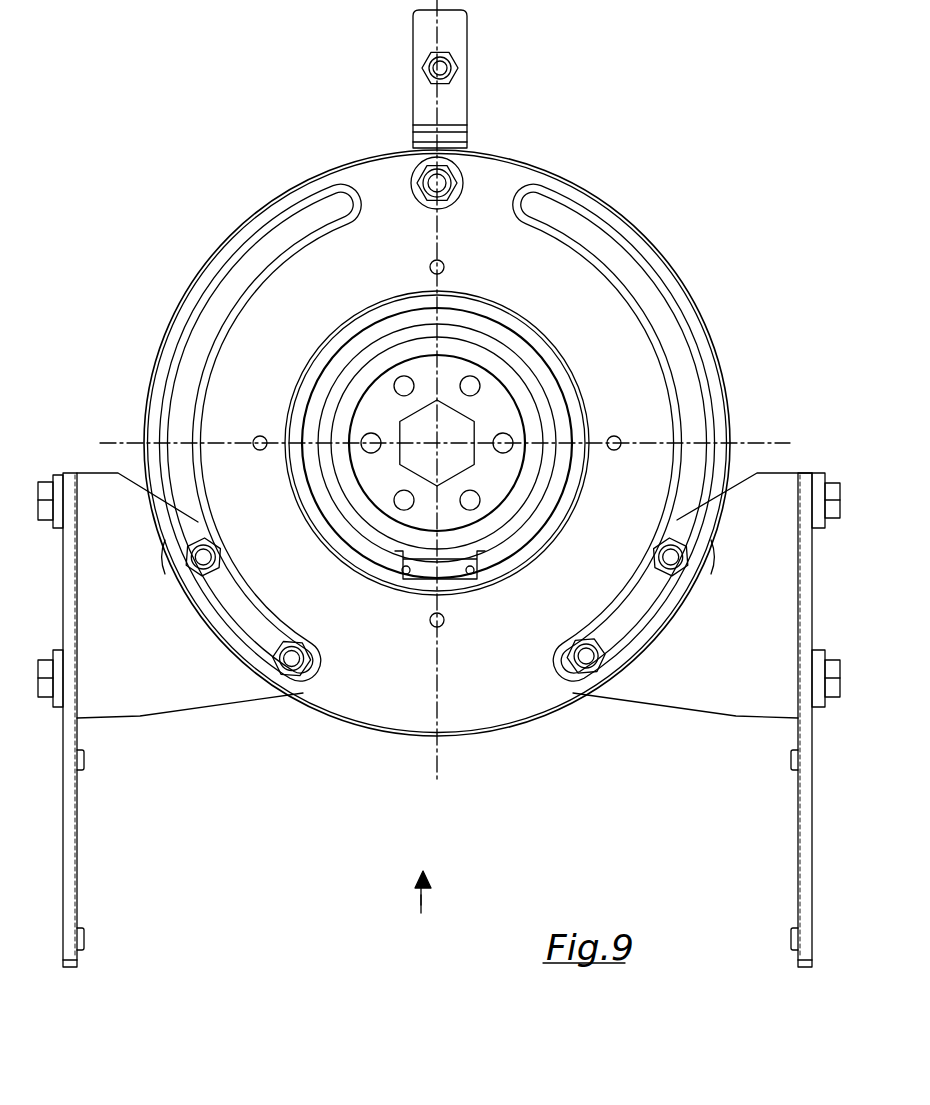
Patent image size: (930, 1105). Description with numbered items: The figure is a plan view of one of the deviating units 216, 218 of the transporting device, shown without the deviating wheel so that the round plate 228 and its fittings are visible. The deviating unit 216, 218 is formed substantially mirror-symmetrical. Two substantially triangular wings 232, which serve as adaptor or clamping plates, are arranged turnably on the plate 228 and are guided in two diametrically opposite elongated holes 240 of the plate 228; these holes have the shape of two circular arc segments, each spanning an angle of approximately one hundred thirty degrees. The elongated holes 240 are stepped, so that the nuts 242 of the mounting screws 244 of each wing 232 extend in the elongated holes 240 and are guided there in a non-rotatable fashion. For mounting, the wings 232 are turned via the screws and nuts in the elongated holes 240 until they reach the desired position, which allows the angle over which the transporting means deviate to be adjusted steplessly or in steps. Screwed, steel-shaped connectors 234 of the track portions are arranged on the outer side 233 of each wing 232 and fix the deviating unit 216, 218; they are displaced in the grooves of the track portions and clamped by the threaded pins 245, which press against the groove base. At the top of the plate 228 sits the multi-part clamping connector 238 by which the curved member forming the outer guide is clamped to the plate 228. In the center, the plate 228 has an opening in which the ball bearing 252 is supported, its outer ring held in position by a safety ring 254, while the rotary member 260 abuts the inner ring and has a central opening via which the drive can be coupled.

The deviating unit 216 is at (408, 911).
The deviating unit 218 is at (449, 923).
The round plate 228 is at (456, 722).
The wing 232 is at (133, 694).
The outer side of the wing 233 is at (820, 604).
The connector 234 is at (806, 853).
The clamping connector 238 is at (455, 37).
The elongated hole 240 is at (653, 281).
The nut 242 is at (200, 548).
The mounting screw 244 is at (290, 668).
The threaded pin 245 is at (84, 761).
The ball bearing 252 is at (375, 355).
The safety ring 254 is at (513, 341).
The rotary member 260 is at (448, 390).